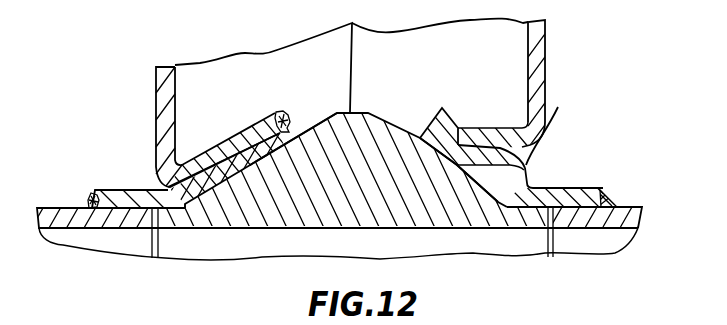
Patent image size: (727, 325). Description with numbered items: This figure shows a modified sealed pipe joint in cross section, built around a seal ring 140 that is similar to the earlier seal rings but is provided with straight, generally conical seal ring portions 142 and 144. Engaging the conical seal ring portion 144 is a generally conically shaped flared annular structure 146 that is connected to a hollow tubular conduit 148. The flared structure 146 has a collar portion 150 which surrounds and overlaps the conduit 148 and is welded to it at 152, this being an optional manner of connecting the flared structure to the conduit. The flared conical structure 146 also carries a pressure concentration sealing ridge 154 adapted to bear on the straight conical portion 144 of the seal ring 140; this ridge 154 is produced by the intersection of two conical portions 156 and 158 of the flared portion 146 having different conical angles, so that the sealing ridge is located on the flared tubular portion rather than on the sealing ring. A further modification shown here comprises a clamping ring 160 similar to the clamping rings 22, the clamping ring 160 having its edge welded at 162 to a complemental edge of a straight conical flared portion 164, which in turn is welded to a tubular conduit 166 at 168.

The clamping ring 22 is at (535, 62).
The seal ring 140 is at (337, 200).
The straight generally conical seal ring portion 142 is at (303, 110).
The straight generally conical seal ring portion 144 is at (381, 112).
The flared annular structure 146 is at (541, 148).
The hollow tubular conduit 148 is at (628, 205).
The collar portion 150 is at (564, 192).
The weld 152 is at (637, 230).
The pressure concentration sealing ridge 154 is at (451, 174).
The conical portion 156 is at (433, 127).
The conical portion 158 is at (493, 130).
The clamping ring 160 is at (165, 122).
The weld 162 is at (275, 113).
The straight conical flared portion 164 is at (257, 177).
The tubular conduit 166 is at (91, 221).
The weld 168 is at (92, 196).